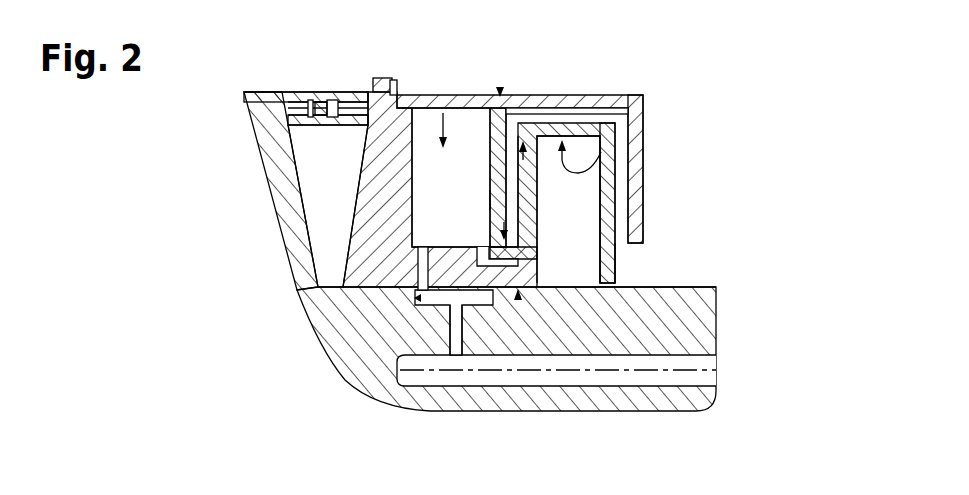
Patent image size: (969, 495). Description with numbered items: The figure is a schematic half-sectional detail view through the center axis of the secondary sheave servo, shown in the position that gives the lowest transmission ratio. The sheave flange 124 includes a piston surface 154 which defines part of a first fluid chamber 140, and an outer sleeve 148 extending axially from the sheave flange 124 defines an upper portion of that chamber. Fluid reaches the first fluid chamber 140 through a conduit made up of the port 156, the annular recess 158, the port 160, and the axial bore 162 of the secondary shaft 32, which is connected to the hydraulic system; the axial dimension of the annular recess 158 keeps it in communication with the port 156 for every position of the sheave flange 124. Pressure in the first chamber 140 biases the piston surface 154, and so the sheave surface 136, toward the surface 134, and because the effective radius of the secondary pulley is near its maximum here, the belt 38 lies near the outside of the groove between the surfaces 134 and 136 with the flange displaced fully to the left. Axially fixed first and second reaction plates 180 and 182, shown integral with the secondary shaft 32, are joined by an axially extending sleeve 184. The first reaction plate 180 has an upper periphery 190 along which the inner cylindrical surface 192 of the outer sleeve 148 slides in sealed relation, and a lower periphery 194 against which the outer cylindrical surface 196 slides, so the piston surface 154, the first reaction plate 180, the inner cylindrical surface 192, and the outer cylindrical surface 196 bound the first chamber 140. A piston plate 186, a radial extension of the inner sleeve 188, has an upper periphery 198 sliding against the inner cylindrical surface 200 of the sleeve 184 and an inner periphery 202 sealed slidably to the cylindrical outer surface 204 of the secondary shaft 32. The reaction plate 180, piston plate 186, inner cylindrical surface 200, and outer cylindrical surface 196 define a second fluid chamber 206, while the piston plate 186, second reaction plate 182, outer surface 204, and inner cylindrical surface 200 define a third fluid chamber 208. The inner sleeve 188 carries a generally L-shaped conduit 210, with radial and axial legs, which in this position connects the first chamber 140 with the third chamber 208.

The secondary shaft 32 is at (708, 343).
The belt 38 is at (312, 91).
The sheave flange 124 is at (387, 79).
The inner surface 134 is at (292, 197).
The sheave surface 136 is at (345, 225).
The first fluid chamber 140 is at (452, 96).
The outer sleeve 148 is at (570, 95).
The piston surface 154 is at (424, 138).
The port 156 is at (451, 177).
The annular recess 158 is at (421, 178).
The port 160 is at (460, 282).
The axial bore 162 is at (527, 360).
The first reaction plate 180 is at (488, 142).
The second reaction plate 182 is at (537, 177).
The sleeve 184 is at (527, 95).
The piston plate 186 is at (528, 193).
The inner sleeve 188 is at (416, 305).
The upper periphery 190 is at (500, 87).
The inner cylindrical surface 192 is at (611, 95).
The lower periphery 194 is at (492, 200).
The outer cylindrical surface 196 is at (473, 250).
The upper periphery 198 is at (605, 168).
The inner cylindrical surface 200 is at (630, 113).
The inner periphery 202 is at (519, 300).
The cylindrical outer surface 204 is at (692, 286).
The second fluid chamber 206 is at (512, 210).
The third fluid chamber 208 is at (617, 259).
The L-shaped conduit 210 is at (473, 266).